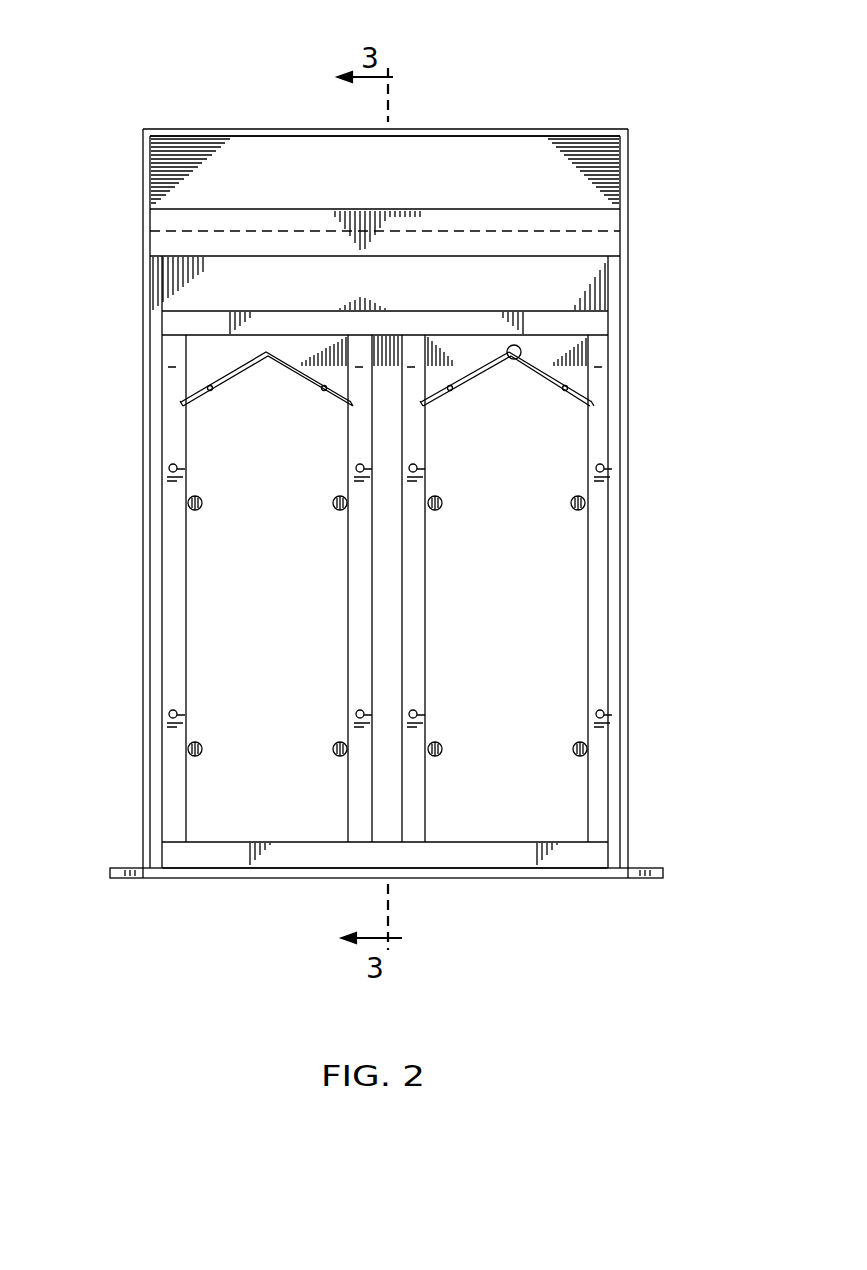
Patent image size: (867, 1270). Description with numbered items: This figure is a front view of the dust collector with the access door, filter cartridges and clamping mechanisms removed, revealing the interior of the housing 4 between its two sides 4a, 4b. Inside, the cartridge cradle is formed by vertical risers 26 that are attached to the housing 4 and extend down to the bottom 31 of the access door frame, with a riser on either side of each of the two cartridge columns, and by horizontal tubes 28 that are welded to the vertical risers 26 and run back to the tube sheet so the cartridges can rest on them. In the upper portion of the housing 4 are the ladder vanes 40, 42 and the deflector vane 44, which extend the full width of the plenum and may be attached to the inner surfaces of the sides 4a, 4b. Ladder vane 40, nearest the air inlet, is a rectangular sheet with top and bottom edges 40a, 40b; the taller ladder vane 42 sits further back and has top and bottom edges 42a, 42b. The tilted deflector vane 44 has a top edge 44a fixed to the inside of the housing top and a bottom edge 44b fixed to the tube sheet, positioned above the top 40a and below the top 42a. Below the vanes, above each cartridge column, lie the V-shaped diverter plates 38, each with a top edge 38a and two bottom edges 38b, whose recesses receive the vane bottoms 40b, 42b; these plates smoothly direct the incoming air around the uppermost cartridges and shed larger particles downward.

The housing 4 is at (370, 503).
The side of the housing 4a is at (140, 266).
The side of the housing 4b is at (628, 240).
The vertical risers 26 is at (177, 682).
The horizontal tubes 28 is at (205, 503).
The bottom of access door frame 31 is at (194, 876).
The diverter plates 38 is at (190, 392).
The top edge 38a is at (518, 360).
The bottom edges 38b is at (592, 413).
The ladder vane 40 is at (597, 277).
The top edge 40a is at (238, 256).
The bottom edge 40b is at (385, 300).
The ladder vane 42 is at (165, 240).
The top edge 42a is at (303, 208).
The bottom edge 42b is at (225, 363).
The deflector vane 44 is at (458, 160).
The top edge 44a is at (507, 147).
The bottom edge 44b is at (530, 231).